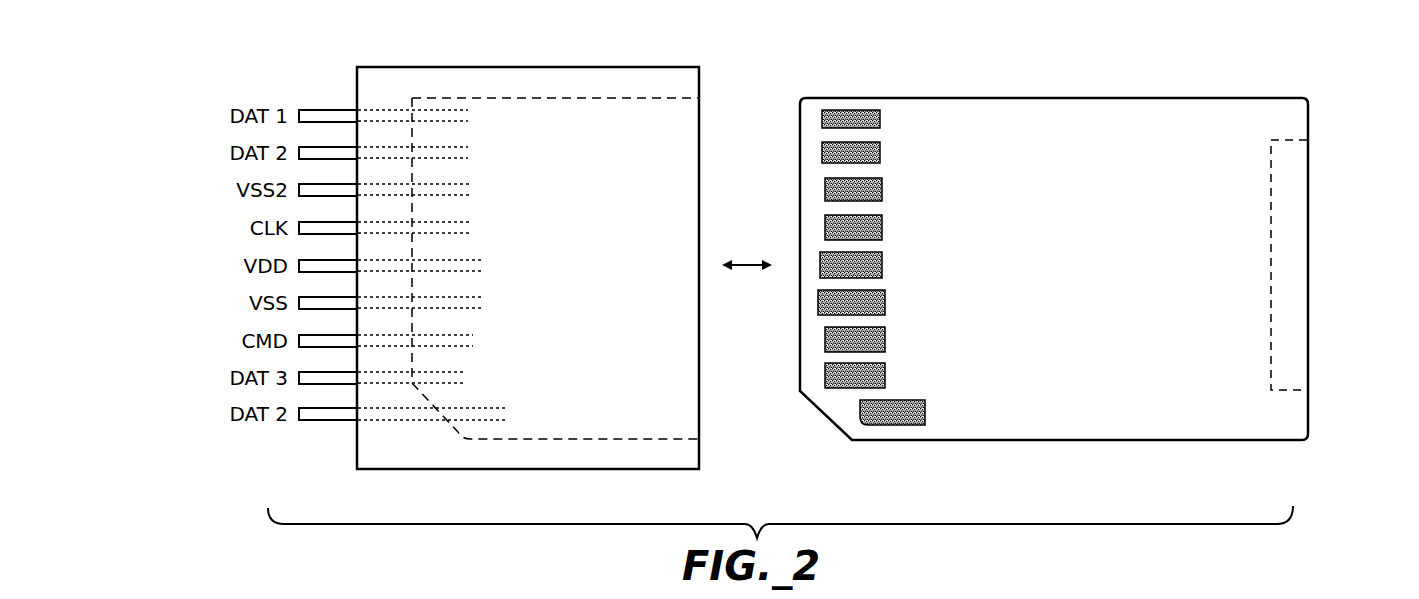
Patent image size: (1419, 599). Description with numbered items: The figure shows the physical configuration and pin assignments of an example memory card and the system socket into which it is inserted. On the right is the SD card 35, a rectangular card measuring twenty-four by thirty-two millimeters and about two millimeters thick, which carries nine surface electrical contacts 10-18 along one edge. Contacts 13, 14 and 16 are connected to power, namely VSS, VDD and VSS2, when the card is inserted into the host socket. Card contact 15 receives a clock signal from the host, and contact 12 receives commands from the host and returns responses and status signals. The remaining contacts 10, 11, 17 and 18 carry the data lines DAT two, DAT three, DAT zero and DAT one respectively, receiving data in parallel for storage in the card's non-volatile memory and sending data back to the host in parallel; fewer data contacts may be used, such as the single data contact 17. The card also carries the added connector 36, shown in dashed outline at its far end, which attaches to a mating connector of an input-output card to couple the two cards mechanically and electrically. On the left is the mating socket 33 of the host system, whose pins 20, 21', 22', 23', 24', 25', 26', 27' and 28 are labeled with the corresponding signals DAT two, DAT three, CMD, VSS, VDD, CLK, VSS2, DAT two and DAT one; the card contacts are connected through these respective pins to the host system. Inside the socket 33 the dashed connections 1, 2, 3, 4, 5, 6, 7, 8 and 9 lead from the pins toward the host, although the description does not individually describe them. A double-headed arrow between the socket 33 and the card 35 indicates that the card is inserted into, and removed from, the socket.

The contact trace 1 is at (465, 380).
The contact trace 2 is at (472, 342).
The contact trace 3 is at (482, 305).
The contact trace 4 is at (482, 267).
The contact trace 5 is at (469, 230).
The contact trace 6 is at (469, 192).
The contact trace 7 is at (467, 155).
The contact trace 8 is at (467, 118).
The contact trace 9 is at (504, 415).
The surface electrical contact 10 is at (927, 412).
The surface electrical contact 11 is at (885, 371).
The surface electrical contact 12 is at (885, 335).
The surface electrical contact 13 is at (885, 298).
The surface electrical contact 14 is at (882, 260).
The surface electrical contact 15 is at (882, 223).
The surface electrical contact 16 is at (882, 186).
The surface electrical contact 17 is at (880, 150).
The surface electrical contact 18 is at (880, 118).
The socket pin 20 is at (350, 408).
The socket pin 21' is at (327, 366).
The socket pin 22' is at (327, 329).
The socket pin 23' is at (327, 291).
The socket pin 24' is at (327, 254).
The socket pin 25' is at (327, 216).
The socket pin 26' is at (327, 178).
The socket pin 27' is at (327, 141).
The socket pin 28 is at (350, 110).
The socket 33 is at (556, 482).
The SD card 35 is at (1164, 453).
The connector 36 is at (1288, 187).